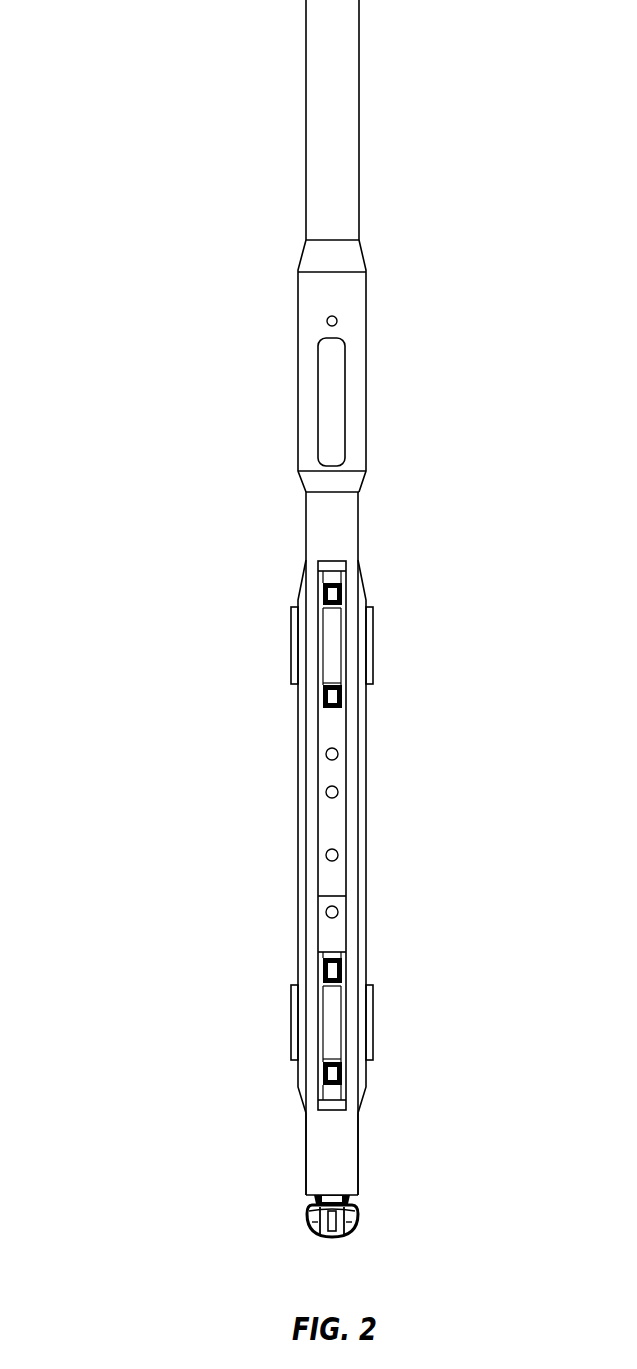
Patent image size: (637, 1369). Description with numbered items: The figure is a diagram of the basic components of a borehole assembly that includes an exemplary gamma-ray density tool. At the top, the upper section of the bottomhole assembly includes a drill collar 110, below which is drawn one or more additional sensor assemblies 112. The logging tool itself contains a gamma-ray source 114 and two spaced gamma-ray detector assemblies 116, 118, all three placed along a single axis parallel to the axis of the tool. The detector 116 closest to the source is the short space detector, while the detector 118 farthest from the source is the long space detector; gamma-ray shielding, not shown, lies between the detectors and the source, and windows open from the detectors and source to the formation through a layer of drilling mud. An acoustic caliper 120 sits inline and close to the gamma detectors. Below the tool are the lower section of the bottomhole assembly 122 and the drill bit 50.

The drill collar 110 is at (172, 60).
The additional sensor assembly 112 is at (365, 408).
The gamma-ray source 114 is at (366, 748).
The short space detector assembly 116 is at (366, 783).
The long space detector assembly 118 is at (366, 853).
The acoustic caliper 120 is at (366, 910).
The lower section of the bottomhole assembly 122 is at (360, 1152).
The drill bit 50 is at (384, 1211).